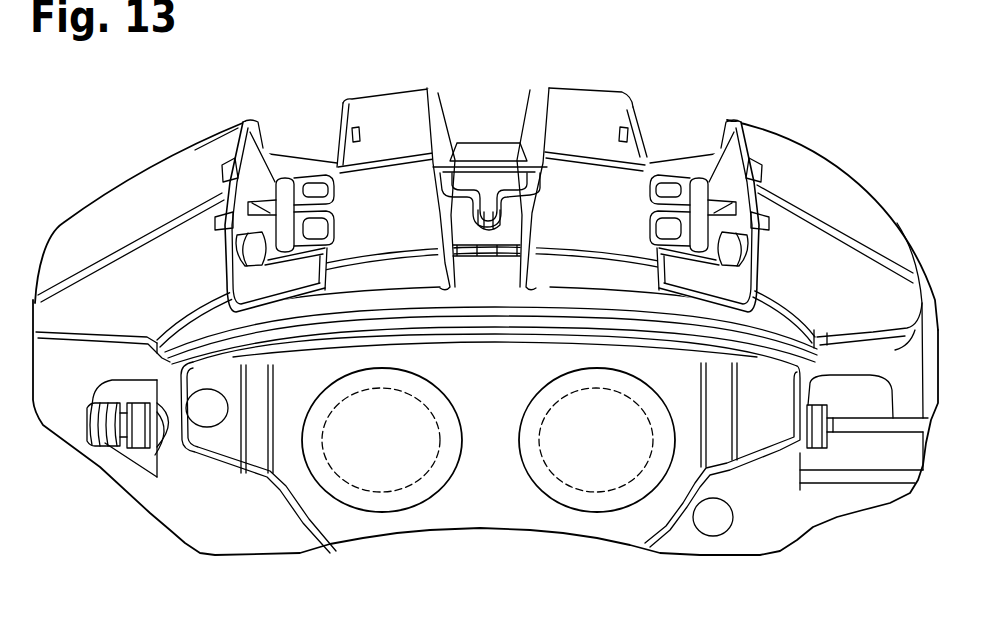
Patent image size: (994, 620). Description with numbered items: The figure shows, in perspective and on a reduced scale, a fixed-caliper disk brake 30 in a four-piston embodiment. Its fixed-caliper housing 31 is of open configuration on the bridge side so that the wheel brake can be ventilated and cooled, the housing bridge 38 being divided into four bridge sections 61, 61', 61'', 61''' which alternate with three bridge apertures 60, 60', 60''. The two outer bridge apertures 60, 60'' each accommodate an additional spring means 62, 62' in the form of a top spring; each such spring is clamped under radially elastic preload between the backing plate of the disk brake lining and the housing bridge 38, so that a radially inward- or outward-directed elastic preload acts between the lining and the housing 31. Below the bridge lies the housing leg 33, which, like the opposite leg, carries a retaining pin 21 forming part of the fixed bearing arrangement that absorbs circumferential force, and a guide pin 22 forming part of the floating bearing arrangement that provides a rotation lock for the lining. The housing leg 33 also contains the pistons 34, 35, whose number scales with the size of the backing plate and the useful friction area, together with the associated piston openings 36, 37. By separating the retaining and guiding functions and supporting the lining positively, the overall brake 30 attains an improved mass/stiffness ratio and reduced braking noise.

The disk brake 30 is at (605, 76).
The fixed-caliper housing 31 is at (852, 168).
The housing leg 33 is at (258, 540).
The piston 34 is at (353, 508).
The piston 35 is at (623, 508).
The piston 36 is at (403, 490).
The piston 37 is at (577, 490).
The housing bridge 38 is at (806, 121).
The retaining pin 21 is at (713, 522).
The guide pin 22 is at (207, 412).
The bridge aperture 60 is at (299, 106).
The bridge aperture 60' is at (488, 160).
The bridge aperture 60'' is at (684, 106).
The bridge section 61 is at (128, 255).
The bridge section 61' is at (385, 102).
The bridge section 61'' is at (596, 101).
The bridge section 61''' is at (552, 246).
The spring means 62 is at (274, 192).
The spring means 62' is at (709, 192).